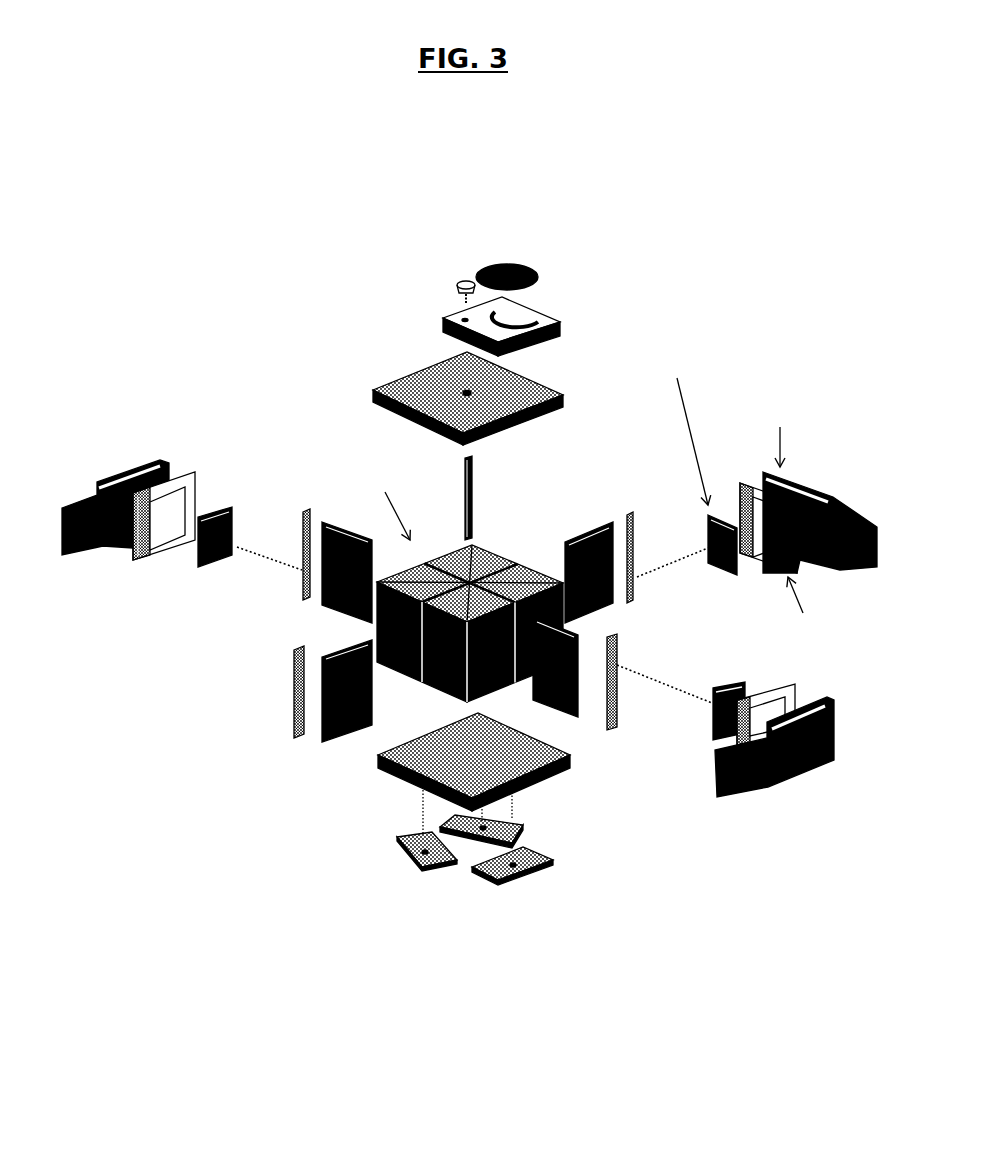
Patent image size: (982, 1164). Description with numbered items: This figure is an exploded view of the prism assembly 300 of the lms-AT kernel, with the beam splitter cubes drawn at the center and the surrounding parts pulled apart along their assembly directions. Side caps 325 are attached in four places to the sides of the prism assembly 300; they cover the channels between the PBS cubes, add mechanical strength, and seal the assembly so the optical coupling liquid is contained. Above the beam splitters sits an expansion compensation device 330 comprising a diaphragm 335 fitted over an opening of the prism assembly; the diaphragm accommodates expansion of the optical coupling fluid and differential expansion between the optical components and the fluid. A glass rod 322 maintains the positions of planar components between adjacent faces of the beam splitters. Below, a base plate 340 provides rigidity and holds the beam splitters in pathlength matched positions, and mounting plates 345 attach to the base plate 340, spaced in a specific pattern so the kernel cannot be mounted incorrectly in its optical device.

The prism assembly 300 is at (260, 882).
The glass rod 322 is at (480, 508).
The side caps 325 is at (302, 493).
The expansion compensation device 330 is at (572, 310).
The diaphragm 335 is at (528, 258).
The base plate 340 is at (568, 785).
The mounting plates 345 is at (387, 882).